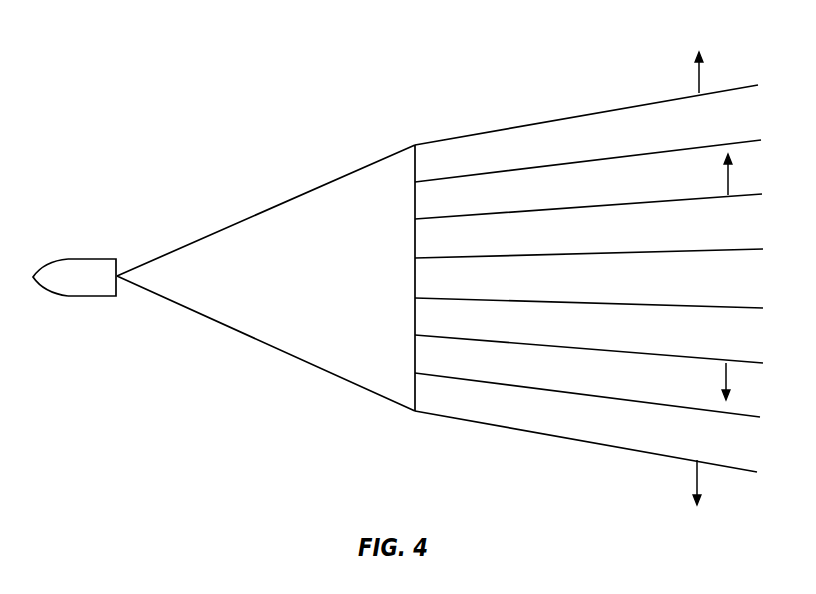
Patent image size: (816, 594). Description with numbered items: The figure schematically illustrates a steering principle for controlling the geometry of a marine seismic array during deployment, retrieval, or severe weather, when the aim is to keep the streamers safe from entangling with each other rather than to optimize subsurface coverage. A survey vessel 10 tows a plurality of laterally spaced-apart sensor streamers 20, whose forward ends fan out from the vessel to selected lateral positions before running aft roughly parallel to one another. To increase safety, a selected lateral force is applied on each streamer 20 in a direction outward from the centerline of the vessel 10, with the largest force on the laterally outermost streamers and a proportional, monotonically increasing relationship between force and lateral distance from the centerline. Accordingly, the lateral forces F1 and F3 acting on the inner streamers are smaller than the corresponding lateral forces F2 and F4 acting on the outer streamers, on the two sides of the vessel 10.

The survey vessel 10 is at (92, 258).
The sensor streamers 20 is at (588, 115).
The lateral force F1 is at (725, 370).
The lateral force F2 is at (696, 470).
The lateral force F3 is at (727, 182).
The lateral force F4 is at (698, 78).